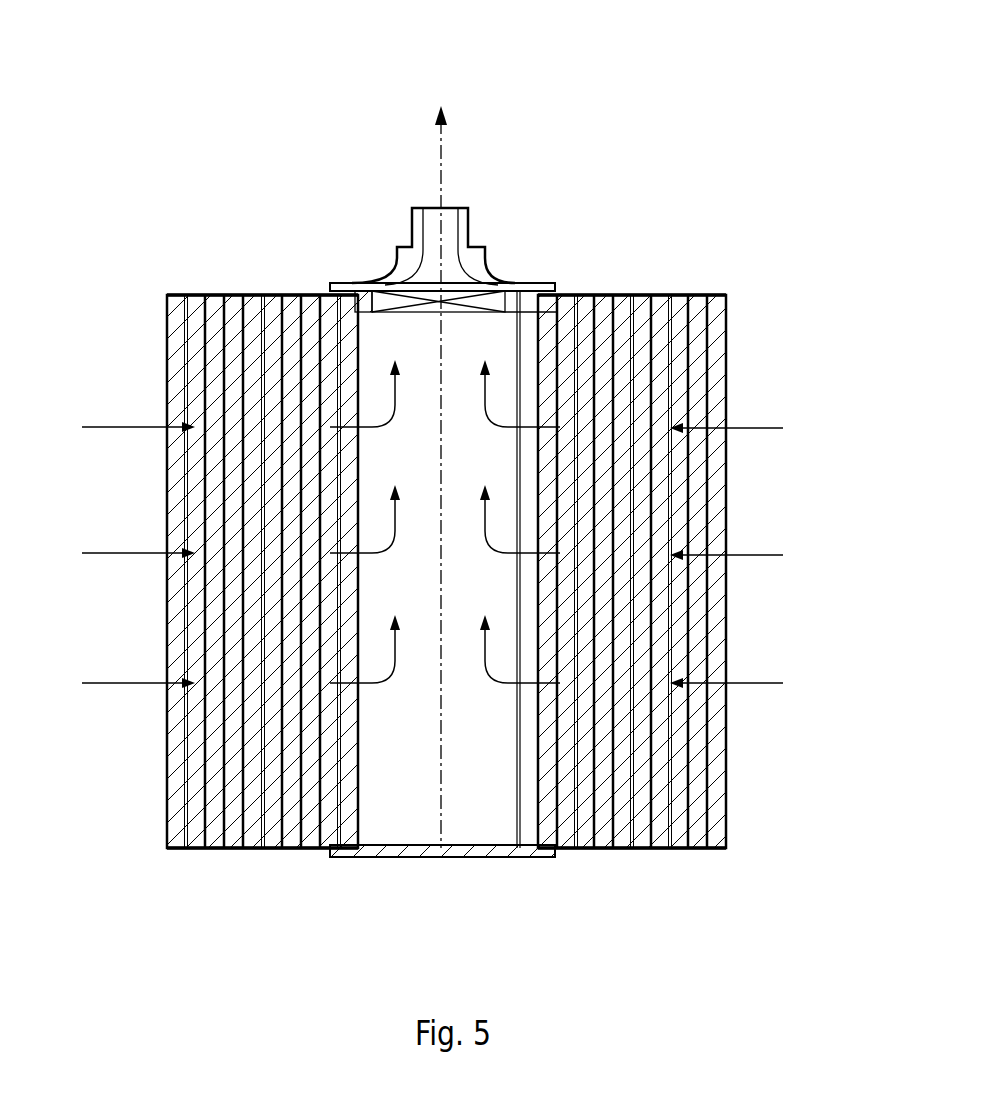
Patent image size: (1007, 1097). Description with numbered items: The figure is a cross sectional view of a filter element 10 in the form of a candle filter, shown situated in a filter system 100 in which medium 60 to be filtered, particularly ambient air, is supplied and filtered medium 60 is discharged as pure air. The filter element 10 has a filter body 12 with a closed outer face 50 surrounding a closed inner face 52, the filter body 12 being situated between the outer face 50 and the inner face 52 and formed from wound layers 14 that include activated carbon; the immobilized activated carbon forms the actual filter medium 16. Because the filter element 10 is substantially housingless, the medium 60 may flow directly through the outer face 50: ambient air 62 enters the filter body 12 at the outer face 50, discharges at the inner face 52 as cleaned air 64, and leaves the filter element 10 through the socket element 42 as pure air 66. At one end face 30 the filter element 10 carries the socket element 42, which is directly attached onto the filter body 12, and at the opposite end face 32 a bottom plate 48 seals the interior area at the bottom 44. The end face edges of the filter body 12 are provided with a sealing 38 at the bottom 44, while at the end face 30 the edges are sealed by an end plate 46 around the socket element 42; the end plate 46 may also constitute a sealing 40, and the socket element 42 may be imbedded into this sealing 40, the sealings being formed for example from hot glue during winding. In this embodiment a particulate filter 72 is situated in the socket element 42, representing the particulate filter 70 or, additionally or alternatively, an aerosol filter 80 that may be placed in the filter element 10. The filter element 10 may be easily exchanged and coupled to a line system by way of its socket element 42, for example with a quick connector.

The filter system 100 is at (678, 132).
The filter element 10 is at (680, 245).
The filter body 12 is at (735, 496).
The wound layer 14 is at (718, 603).
The filter medium 16 is at (727, 648).
The end face 30 is at (615, 293).
The end face 32 is at (608, 852).
The sealing 38 is at (248, 851).
The sealing 40 is at (262, 258).
The socket element 42 is at (513, 292).
The bottom 44 is at (442, 889).
The end plate 46 is at (232, 294).
The bottom plate 48 is at (378, 858).
The outer face 50 is at (166, 782).
The inner face 52 is at (358, 785).
The medium 60 is at (421, 477).
The ambient air 62 is at (92, 425).
The cleaned air 64 is at (375, 690).
The pure air 66 is at (446, 152).
The particulate filter 70 is at (417, 260).
The particulate filter 72 is at (417, 260).
The aerosol filter 80 is at (372, 283).